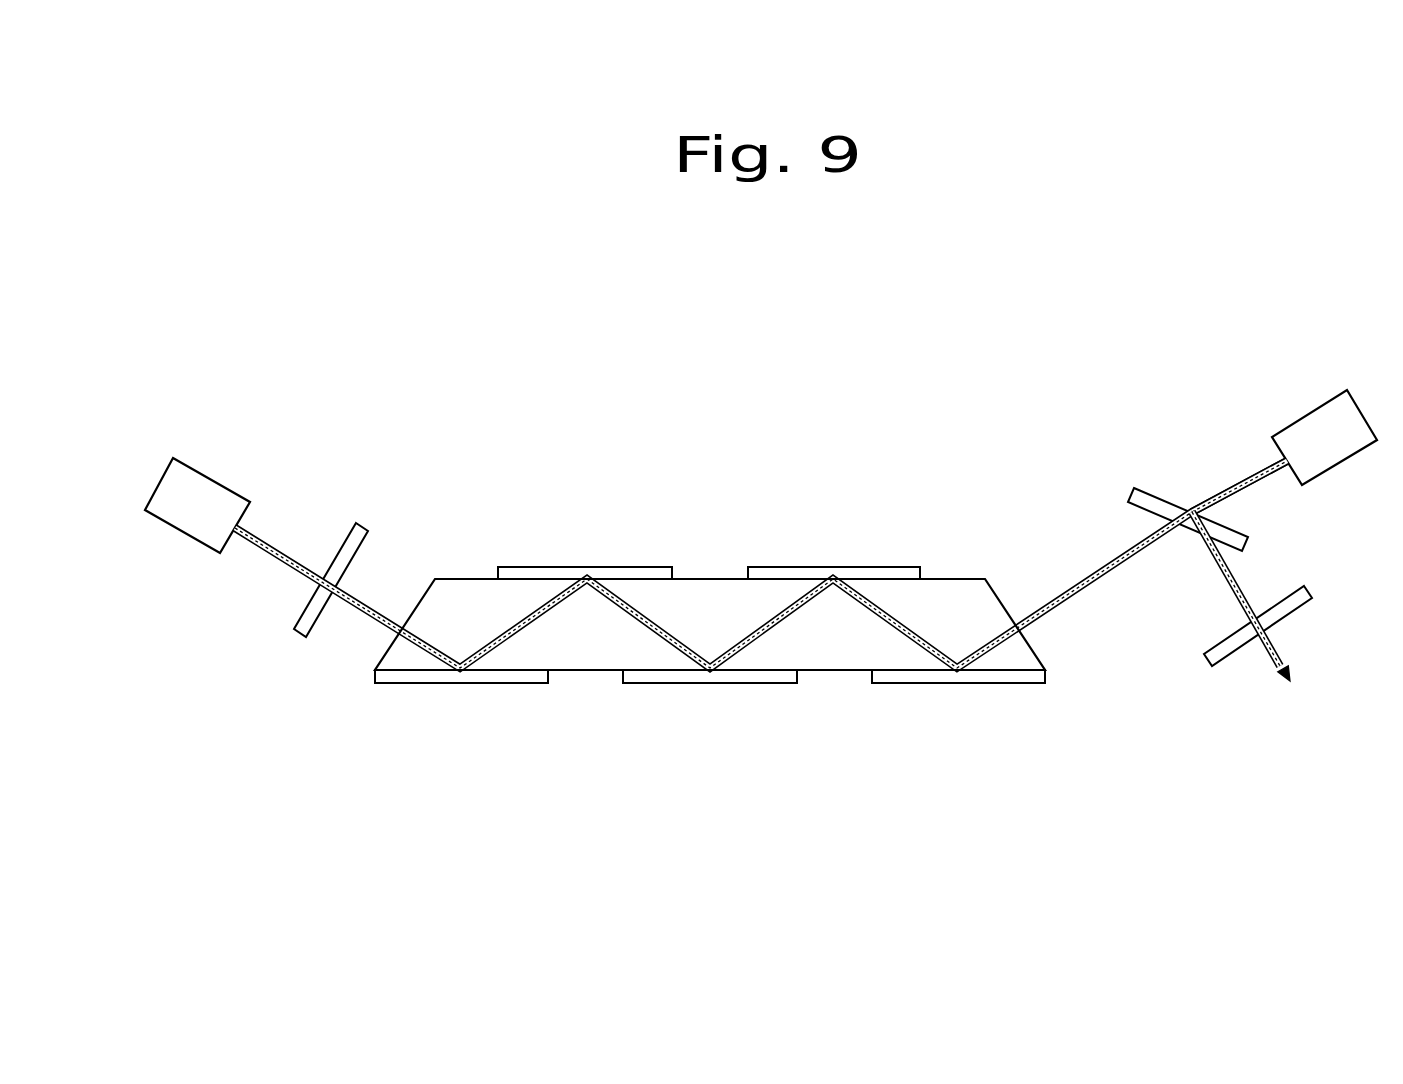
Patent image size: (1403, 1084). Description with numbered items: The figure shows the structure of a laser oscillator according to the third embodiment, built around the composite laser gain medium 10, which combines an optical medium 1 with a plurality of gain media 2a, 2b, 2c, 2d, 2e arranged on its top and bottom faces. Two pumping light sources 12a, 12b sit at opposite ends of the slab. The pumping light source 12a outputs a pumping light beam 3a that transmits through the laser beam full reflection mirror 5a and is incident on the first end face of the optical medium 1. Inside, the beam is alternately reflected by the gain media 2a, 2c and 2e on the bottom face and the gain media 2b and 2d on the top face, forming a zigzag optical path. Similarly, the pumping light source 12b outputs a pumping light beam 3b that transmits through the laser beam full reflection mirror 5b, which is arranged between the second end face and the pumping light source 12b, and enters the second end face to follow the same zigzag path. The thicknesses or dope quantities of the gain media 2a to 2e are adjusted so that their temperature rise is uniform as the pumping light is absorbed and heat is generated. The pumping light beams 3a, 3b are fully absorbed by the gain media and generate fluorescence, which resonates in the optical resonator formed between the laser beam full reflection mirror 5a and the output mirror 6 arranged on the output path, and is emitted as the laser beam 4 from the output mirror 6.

The optical medium 1 is at (967, 595).
The gain medium 2a is at (463, 684).
The gain medium 2b is at (587, 566).
The gain medium 2c is at (725, 684).
The gain medium 2d is at (835, 566).
The gain medium 2e is at (960, 684).
The pumping light beam 3a is at (287, 558).
The pumping light beam 3b is at (1248, 478).
The laser beam 4 is at (1280, 645).
The laser beam full reflection mirror 5a is at (302, 625).
The laser beam full reflection mirror 5b is at (1168, 508).
The output mirror 6 is at (1210, 653).
The laser gain medium 10 is at (704, 735).
The pumping light source 12a is at (178, 532).
The pumping light source 12b is at (1310, 422).